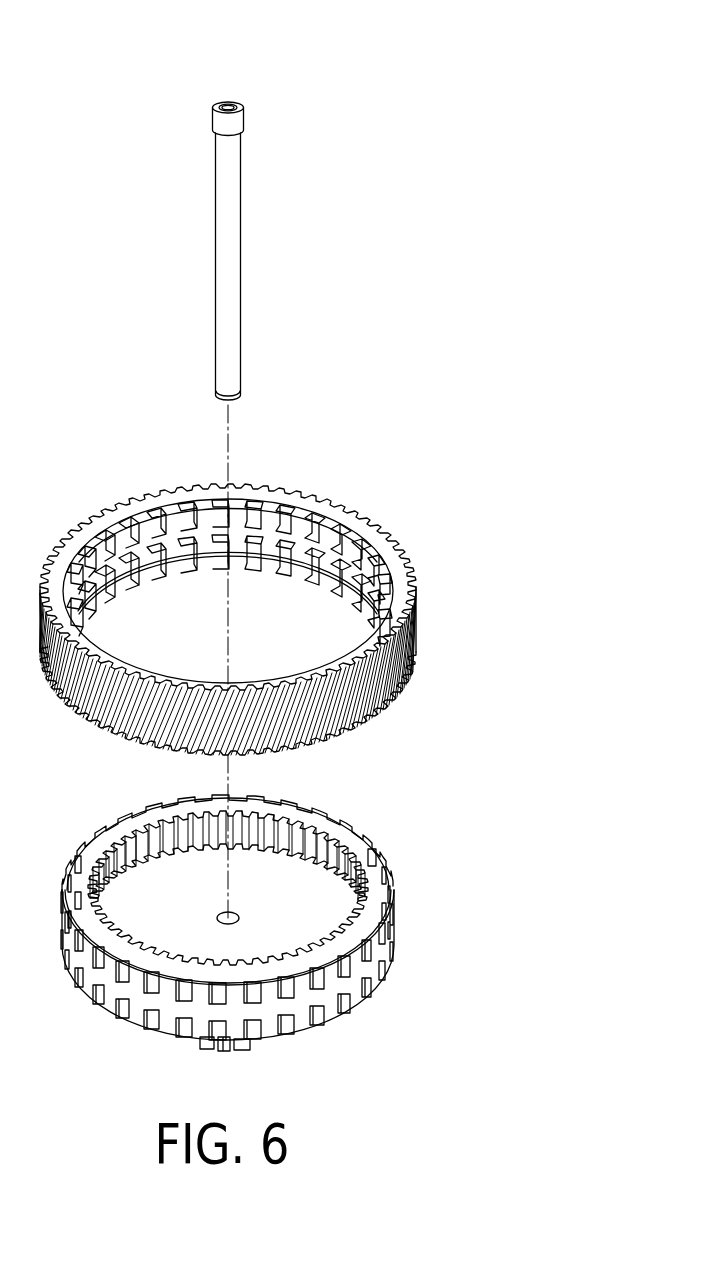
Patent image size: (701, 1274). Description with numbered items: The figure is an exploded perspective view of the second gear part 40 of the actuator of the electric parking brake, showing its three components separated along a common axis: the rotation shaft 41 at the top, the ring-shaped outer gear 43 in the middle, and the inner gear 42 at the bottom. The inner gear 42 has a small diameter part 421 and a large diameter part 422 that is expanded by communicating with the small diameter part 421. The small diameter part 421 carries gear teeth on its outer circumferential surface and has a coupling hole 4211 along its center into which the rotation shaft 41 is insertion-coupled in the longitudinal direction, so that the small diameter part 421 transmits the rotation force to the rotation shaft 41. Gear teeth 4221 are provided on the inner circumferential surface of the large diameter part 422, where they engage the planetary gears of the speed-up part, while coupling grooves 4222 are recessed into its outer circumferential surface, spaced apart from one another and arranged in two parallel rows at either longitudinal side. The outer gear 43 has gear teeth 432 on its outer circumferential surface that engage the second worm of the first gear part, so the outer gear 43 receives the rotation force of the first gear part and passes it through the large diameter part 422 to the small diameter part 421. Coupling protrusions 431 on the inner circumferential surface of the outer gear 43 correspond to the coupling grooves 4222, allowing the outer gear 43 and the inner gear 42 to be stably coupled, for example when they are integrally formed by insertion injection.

The second gear part 40 is at (75, 76).
The rotation shaft 41 is at (232, 240).
The inner gear 42 is at (411, 906).
The small diameter part 421 is at (226, 1043).
The coupling hole 4211 is at (224, 916).
The large diameter part 422 is at (317, 997).
The gear teeth 4221 is at (337, 864).
The coupling grooves 4222 is at (365, 980).
The outer gear 43 is at (433, 594).
The coupling protrusions 431 is at (117, 570).
The gear teeth 432 is at (420, 646).